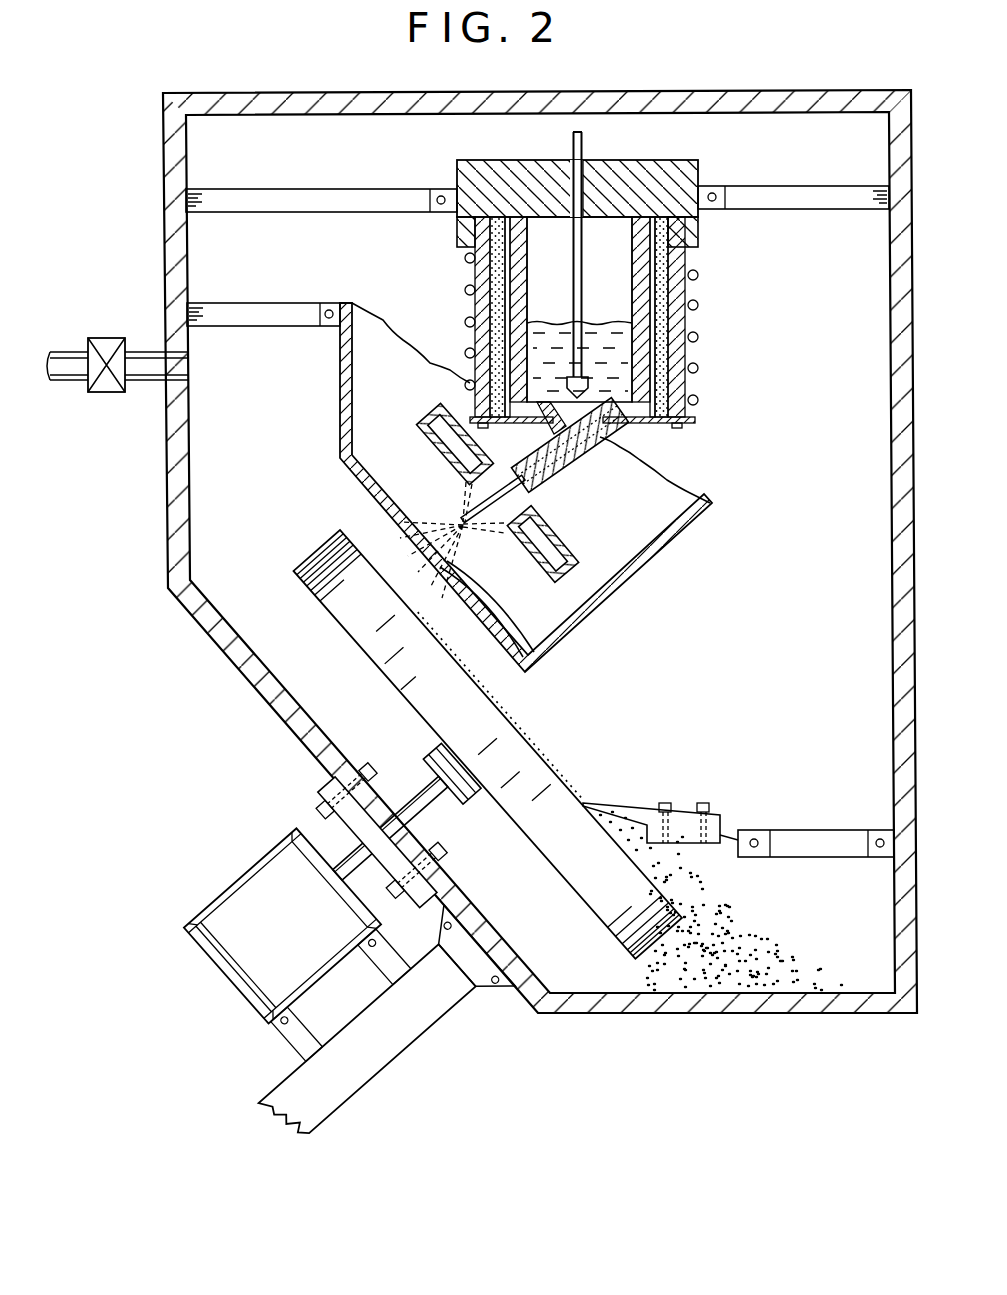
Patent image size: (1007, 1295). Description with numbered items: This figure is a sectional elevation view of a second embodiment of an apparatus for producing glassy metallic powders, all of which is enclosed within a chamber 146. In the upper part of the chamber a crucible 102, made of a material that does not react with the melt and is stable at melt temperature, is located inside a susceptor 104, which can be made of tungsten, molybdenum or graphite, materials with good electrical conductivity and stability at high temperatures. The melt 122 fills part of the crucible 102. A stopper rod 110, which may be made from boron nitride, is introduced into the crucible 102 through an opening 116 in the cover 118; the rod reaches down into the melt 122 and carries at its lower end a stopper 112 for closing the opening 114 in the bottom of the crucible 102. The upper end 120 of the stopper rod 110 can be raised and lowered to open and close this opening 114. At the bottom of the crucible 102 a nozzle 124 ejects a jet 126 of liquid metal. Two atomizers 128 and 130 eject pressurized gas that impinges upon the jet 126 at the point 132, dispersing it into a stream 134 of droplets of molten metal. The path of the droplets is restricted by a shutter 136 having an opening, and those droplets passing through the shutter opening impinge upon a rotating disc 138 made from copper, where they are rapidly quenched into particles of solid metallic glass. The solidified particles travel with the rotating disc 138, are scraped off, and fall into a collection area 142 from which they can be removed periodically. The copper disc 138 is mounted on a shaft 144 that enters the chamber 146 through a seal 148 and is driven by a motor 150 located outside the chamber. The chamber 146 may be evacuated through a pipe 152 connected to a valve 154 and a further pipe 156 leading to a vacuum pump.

The crucible 102 is at (512, 263).
The susceptor 104 is at (497, 296).
The stopper rod 110 is at (583, 273).
The stopper 112 is at (583, 362).
The opening 114 is at (607, 422).
The opening 116 is at (590, 186).
The cover 118 is at (700, 166).
The upper end 120 is at (572, 133).
The melt 122 is at (545, 336).
The nozzle 124 is at (530, 481).
The jet 126 is at (500, 501).
The atomizer 128 is at (442, 420).
The atomizer 130 is at (572, 557).
The impingement point 132 is at (458, 521).
The stream 134 is at (428, 598).
The shutter 136 is at (456, 596).
The rotating disc 138 is at (400, 672).
The collection area 142 is at (840, 950).
The shaft 144 is at (425, 810).
The chamber 146 is at (629, 736).
The seal 148 is at (314, 785).
The motor 150 is at (297, 927).
The pipe 152 is at (185, 362).
The valve 154 is at (100, 338).
The pipe 156 is at (72, 367).